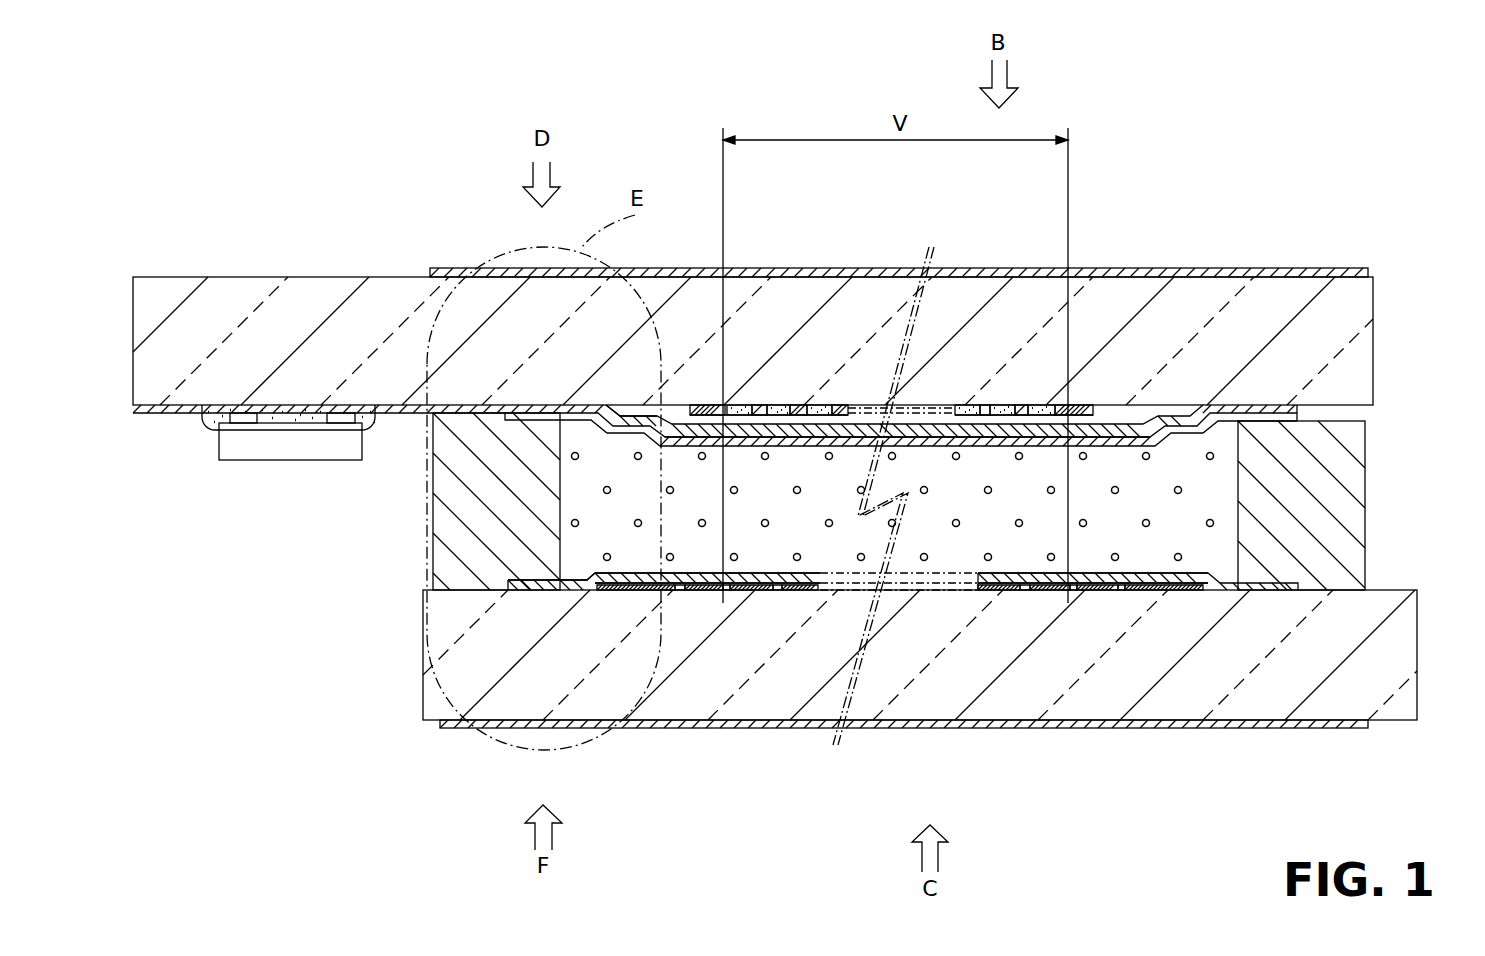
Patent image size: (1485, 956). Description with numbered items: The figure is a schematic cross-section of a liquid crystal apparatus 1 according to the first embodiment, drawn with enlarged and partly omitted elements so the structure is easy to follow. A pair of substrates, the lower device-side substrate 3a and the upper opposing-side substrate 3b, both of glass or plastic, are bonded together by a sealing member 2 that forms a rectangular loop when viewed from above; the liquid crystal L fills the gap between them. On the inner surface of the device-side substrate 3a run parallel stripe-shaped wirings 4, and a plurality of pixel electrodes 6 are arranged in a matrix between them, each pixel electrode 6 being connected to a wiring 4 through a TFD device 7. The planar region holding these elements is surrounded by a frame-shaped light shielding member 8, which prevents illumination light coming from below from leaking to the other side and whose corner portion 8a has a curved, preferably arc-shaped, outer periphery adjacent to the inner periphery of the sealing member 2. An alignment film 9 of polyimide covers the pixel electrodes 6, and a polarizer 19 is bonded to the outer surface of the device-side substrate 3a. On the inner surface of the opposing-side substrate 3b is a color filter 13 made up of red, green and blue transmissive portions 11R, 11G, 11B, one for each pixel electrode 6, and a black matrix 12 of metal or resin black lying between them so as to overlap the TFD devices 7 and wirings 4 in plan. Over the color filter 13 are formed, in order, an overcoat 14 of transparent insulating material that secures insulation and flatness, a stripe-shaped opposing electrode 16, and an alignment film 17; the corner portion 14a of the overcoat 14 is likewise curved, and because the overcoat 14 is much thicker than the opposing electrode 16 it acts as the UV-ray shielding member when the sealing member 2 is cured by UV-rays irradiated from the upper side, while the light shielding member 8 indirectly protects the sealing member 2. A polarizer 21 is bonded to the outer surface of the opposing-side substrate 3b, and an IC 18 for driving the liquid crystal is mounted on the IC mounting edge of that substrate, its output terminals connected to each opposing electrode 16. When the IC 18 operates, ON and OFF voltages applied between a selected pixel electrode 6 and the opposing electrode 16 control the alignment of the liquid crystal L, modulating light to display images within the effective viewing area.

The liquid crystal apparatus 1 is at (220, 237).
The sealing member 2 is at (448, 540).
The device-side substrate 3a is at (1398, 662).
The opposing-side substrate 3b is at (1362, 357).
The stripe-shaped wiring 4 is at (687, 592).
The pixel electrode 6 is at (705, 592).
The TFD device 7 is at (692, 592).
The frame-shaped light shielding member 8 is at (640, 592).
The corner portion of light shielding member 8a is at (597, 592).
The alignment film 9 is at (930, 572).
The red transmissive portion 11R is at (737, 405).
The green transmissive portion 11G is at (778, 405).
The blue transmissive portion 11B is at (822, 405).
The black matrix 12 is at (785, 430).
The color filter 13 is at (1088, 397).
The overcoat 14 is at (673, 400).
The corner portion of overcoat 14a is at (612, 393).
The opposing electrode 16 is at (806, 446).
The alignment film 17 is at (622, 440).
The IC for driving liquid crystal 18 is at (275, 458).
The polarizer 19 is at (447, 728).
The polarizer 21 is at (442, 267).
The liquid crystal L is at (893, 507).